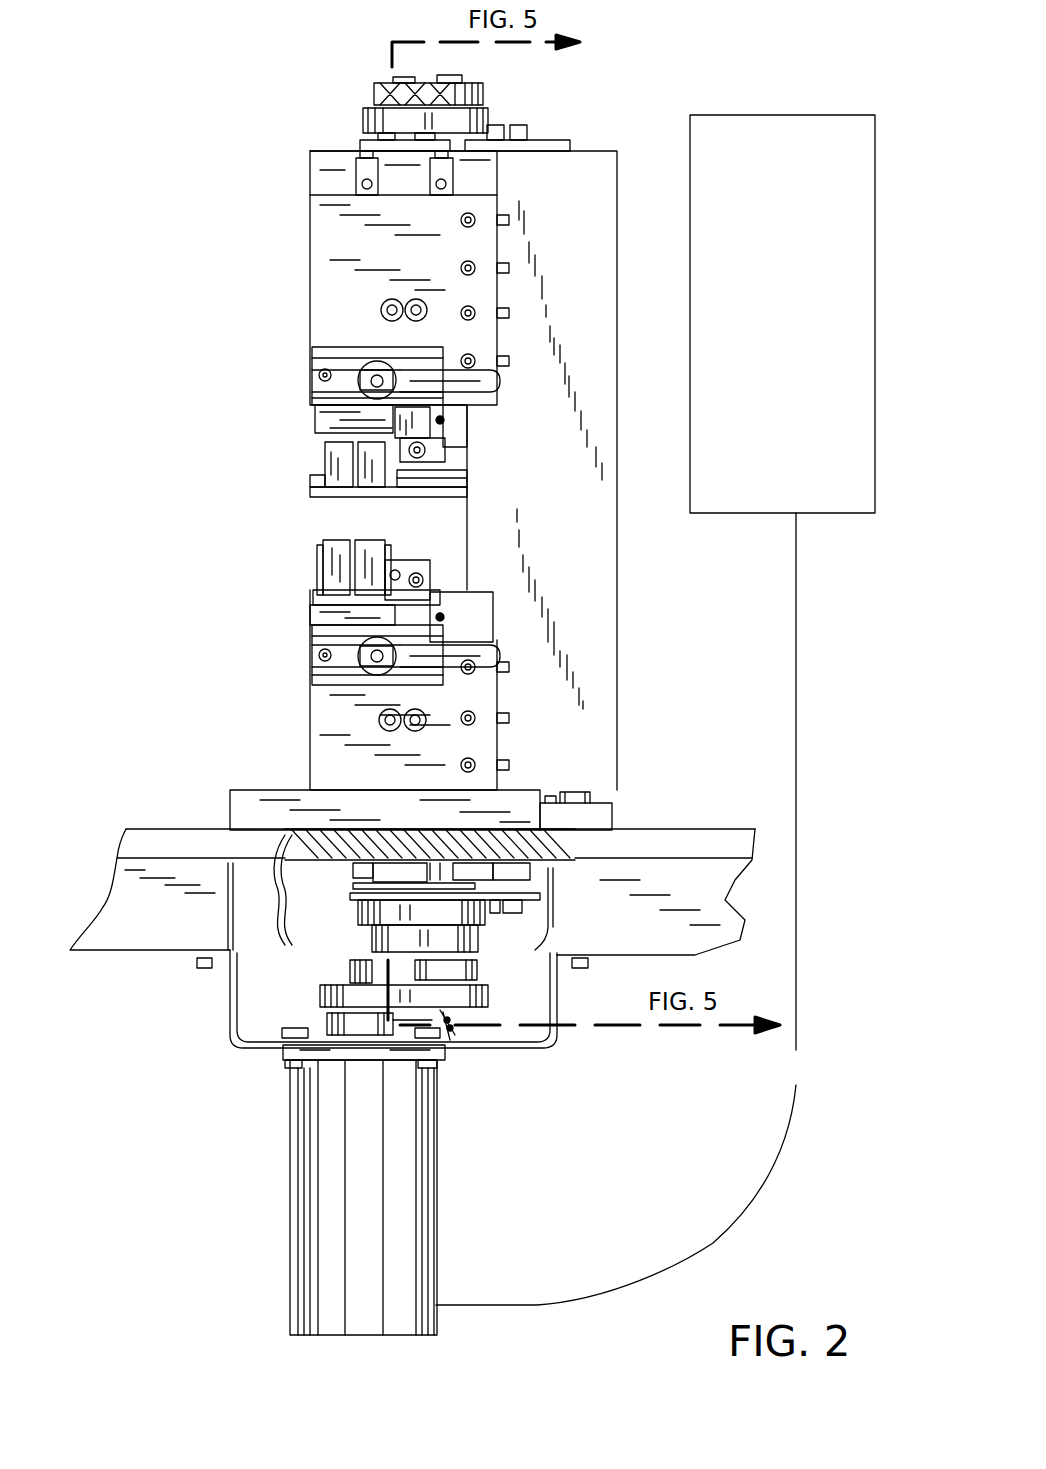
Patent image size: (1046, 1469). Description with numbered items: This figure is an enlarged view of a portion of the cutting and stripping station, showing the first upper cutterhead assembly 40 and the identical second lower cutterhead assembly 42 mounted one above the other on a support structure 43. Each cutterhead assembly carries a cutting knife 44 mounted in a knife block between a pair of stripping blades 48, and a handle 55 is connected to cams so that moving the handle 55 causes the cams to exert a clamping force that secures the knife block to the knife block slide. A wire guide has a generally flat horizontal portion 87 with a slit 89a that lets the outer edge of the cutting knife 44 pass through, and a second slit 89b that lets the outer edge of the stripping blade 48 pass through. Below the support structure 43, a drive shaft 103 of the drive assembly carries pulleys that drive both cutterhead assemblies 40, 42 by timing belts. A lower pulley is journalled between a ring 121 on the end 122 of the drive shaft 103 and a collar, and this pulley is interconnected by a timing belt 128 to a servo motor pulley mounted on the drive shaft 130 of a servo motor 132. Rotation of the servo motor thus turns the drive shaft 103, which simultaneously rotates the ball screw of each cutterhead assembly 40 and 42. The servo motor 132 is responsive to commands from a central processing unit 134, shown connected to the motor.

The upper cutterhead assembly 40 is at (310, 312).
The lower cutterhead assembly 42 is at (310, 703).
The support structure 43 is at (192, 828).
The cutting knife 44 is at (347, 560).
The stripping blades 48 is at (318, 580).
The handle 55 is at (500, 390).
The horizontal portion 87 is at (320, 503).
The slit 89a is at (340, 470).
The second slit 89b is at (393, 488).
The drive shaft 103 is at (440, 870).
The ring 121 is at (448, 1022).
The end 122 is at (446, 1040).
The timing belt 128 is at (345, 995).
The drive shaft 130 is at (348, 968).
The servo motor 132 is at (312, 1162).
The central processing unit 134 is at (765, 490).